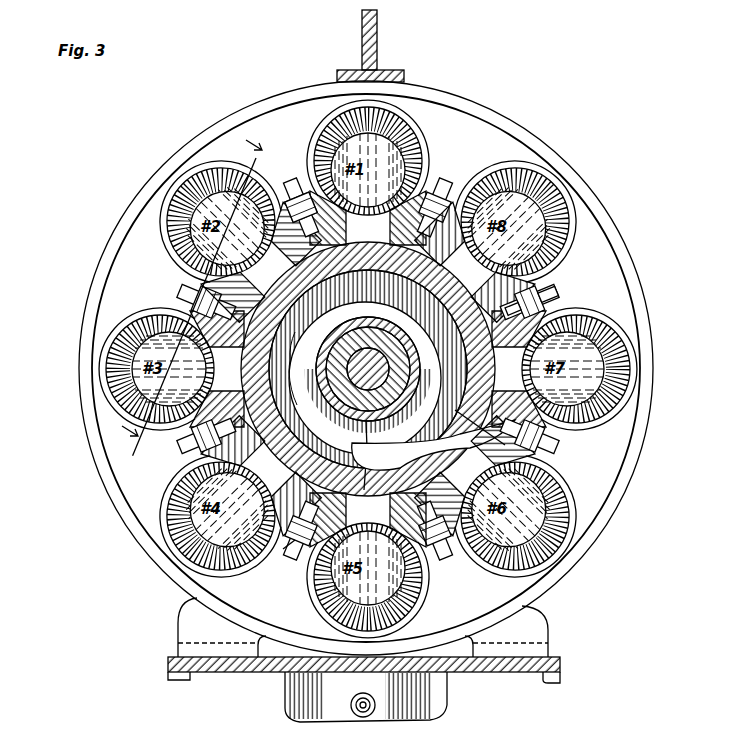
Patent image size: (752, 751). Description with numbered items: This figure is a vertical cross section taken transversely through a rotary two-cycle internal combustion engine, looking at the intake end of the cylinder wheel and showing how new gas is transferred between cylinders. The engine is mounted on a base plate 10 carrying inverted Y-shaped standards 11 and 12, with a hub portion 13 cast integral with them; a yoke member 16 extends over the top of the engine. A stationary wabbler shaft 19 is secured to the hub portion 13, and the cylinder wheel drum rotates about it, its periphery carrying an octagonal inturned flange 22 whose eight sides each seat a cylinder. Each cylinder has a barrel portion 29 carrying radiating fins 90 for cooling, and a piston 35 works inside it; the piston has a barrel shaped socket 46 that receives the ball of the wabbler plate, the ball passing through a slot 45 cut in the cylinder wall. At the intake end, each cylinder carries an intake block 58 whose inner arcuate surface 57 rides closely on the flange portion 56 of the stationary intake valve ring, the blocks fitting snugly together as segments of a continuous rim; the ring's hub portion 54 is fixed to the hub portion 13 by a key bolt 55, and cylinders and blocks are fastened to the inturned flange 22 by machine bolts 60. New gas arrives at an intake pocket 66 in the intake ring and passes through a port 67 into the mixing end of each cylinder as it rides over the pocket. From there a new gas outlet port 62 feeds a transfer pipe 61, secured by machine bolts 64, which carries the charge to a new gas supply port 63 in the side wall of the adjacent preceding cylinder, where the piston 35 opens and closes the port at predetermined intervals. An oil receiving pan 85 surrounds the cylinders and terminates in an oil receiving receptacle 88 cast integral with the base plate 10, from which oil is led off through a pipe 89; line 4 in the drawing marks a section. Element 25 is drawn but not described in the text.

The section line 4- 4 is at (200, 301).
The base plate 10 is at (168, 664).
The inverted Y-shaped standard 11 is at (533, 621).
The inverted Y-shaped standard 12 is at (192, 611).
The hub portion 13 is at (390, 340).
The yoke member 16 is at (380, 48).
The wabbler shaft 19 is at (373, 366).
The inturned flange 22 is at (520, 362).
The cam lobe edge 25 is at (480, 412).
The barrel portion 29 is at (200, 177).
The piston 35 is at (197, 200).
The slot 45 is at (290, 549).
The barrel shaped socket 46 is at (213, 200).
The hub portion 54 is at (365, 425).
The key bolt 55 is at (368, 369).
The flange portion 56 is at (252, 363).
The inner arcuate surface 57 is at (250, 335).
The intake block 58 is at (250, 402).
The machine bolt 60 is at (536, 298).
The transfer pipe 61 is at (187, 293).
The new gas outlet port 62 is at (180, 323).
The new gas supply port 63 is at (384, 512).
The machine bolt 64 is at (559, 307).
The intake pocket 66 is at (405, 475).
The port 67 is at (303, 291).
The oil receiving pan 85 is at (486, 115).
The oil receiving receptacle 88 is at (320, 697).
The pipe 89 is at (373, 710).
The radiating fins 90 is at (325, 127).